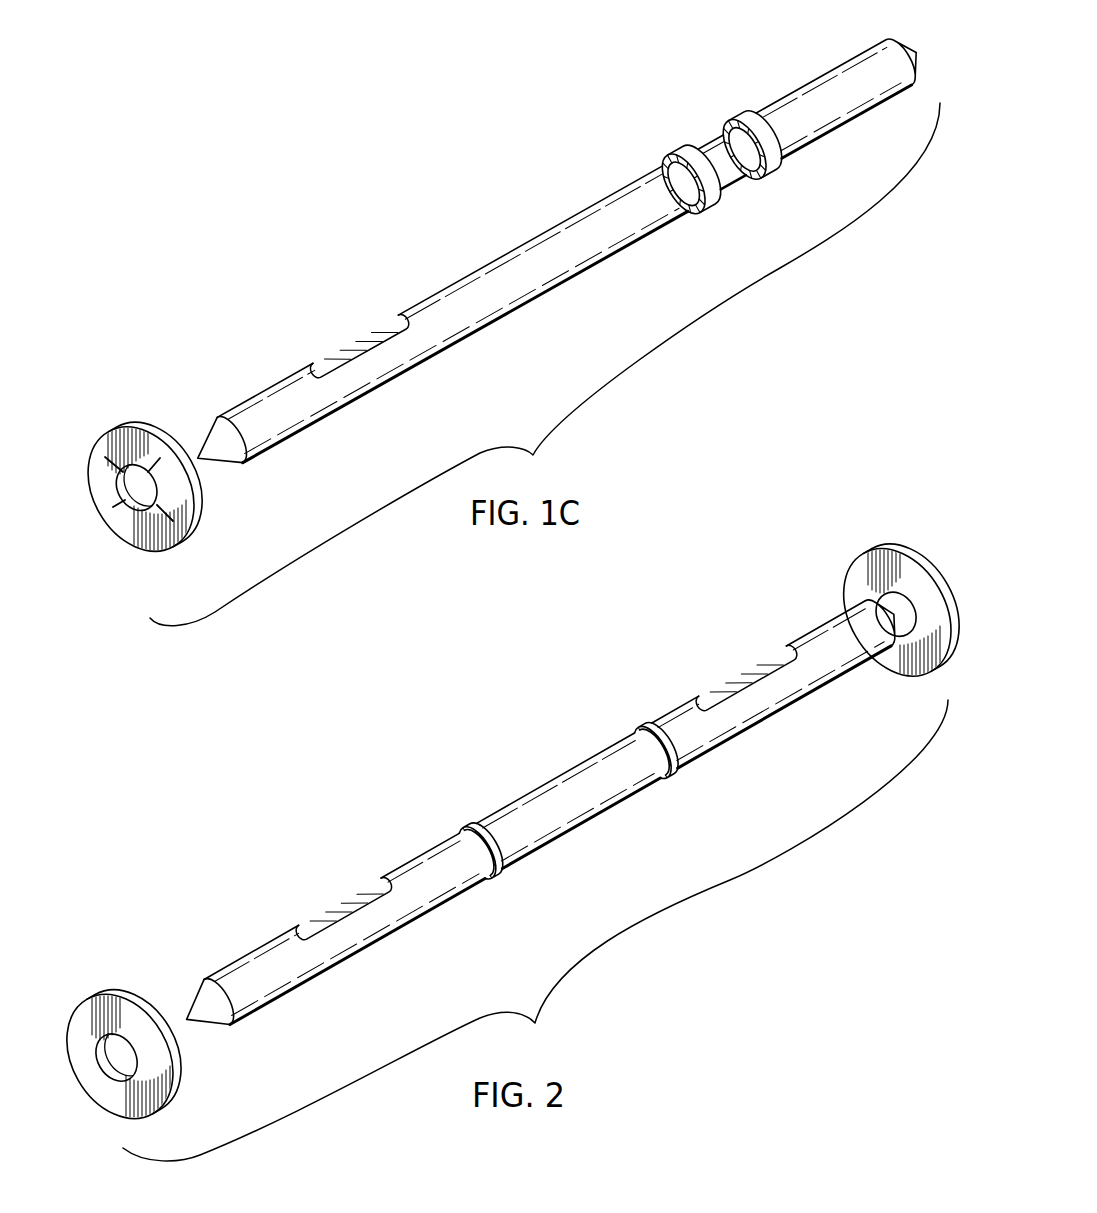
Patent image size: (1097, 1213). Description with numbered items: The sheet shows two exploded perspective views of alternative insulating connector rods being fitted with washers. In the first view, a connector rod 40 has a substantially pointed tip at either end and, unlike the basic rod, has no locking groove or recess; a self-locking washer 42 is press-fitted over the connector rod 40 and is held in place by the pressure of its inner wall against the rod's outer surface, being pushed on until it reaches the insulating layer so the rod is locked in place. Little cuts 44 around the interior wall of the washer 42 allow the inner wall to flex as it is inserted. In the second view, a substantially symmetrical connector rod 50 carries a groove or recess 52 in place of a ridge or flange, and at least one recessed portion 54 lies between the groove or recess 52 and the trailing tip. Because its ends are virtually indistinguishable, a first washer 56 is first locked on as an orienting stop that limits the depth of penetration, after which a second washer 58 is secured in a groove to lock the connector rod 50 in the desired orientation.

In FIG. 1C, the connector rod 40 is at (435, 272).
In FIG. 1C, the self-locking washer 42 is at (134, 440).
In FIG. 1C, the cuts 44 is at (153, 525).
In FIG. 2, the connector rod 50 is at (490, 787).
In FIG. 2, the groove or recess 52 is at (645, 735).
In FIG. 2, the recessed portion 54 is at (750, 680).
In FIG. 2, the first washer 56 is at (873, 572).
In FIG. 2, the second washer 58 is at (123, 1010).